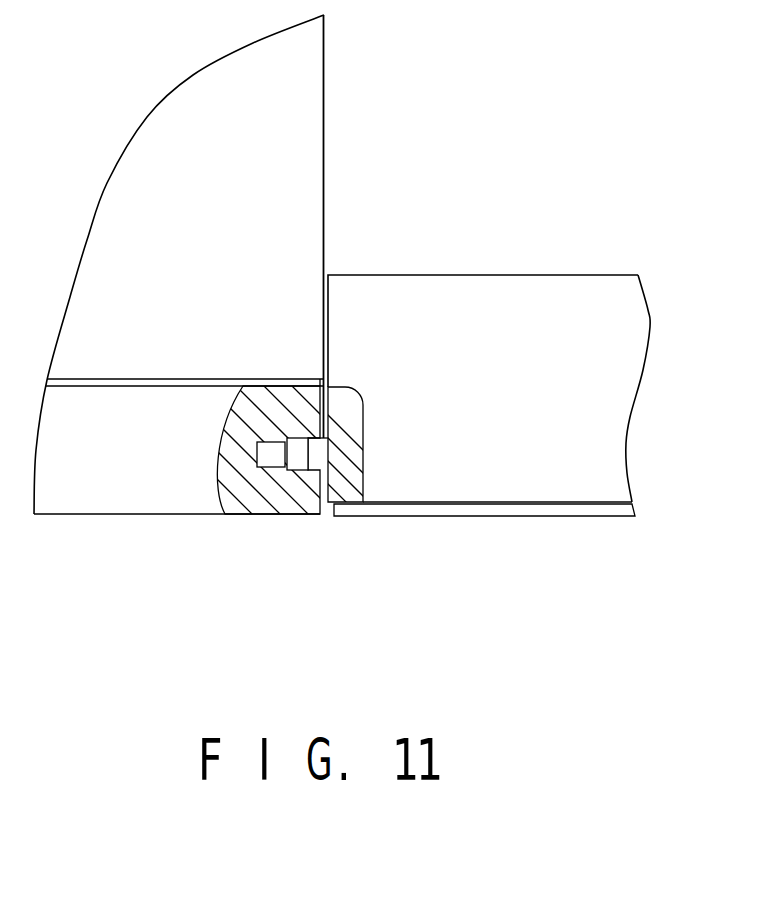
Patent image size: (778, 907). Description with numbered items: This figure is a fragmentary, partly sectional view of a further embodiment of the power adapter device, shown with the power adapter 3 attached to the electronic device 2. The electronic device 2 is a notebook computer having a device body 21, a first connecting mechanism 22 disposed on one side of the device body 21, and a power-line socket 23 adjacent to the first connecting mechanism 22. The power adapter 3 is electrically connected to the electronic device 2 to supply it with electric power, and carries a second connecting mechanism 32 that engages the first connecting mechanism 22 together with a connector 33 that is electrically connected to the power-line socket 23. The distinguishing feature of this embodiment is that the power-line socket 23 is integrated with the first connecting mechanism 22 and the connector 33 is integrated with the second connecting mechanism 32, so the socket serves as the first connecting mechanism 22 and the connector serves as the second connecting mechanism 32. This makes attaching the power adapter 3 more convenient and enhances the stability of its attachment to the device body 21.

The electronic device 2 is at (340, 62).
The device body 21 is at (128, 487).
The first connecting mechanism 22 is at (313, 467).
The power-line socket 23 is at (274, 467).
The power adapter 3 is at (455, 522).
The second connecting mechanism 32 is at (302, 462).
The connector 33 is at (272, 452).